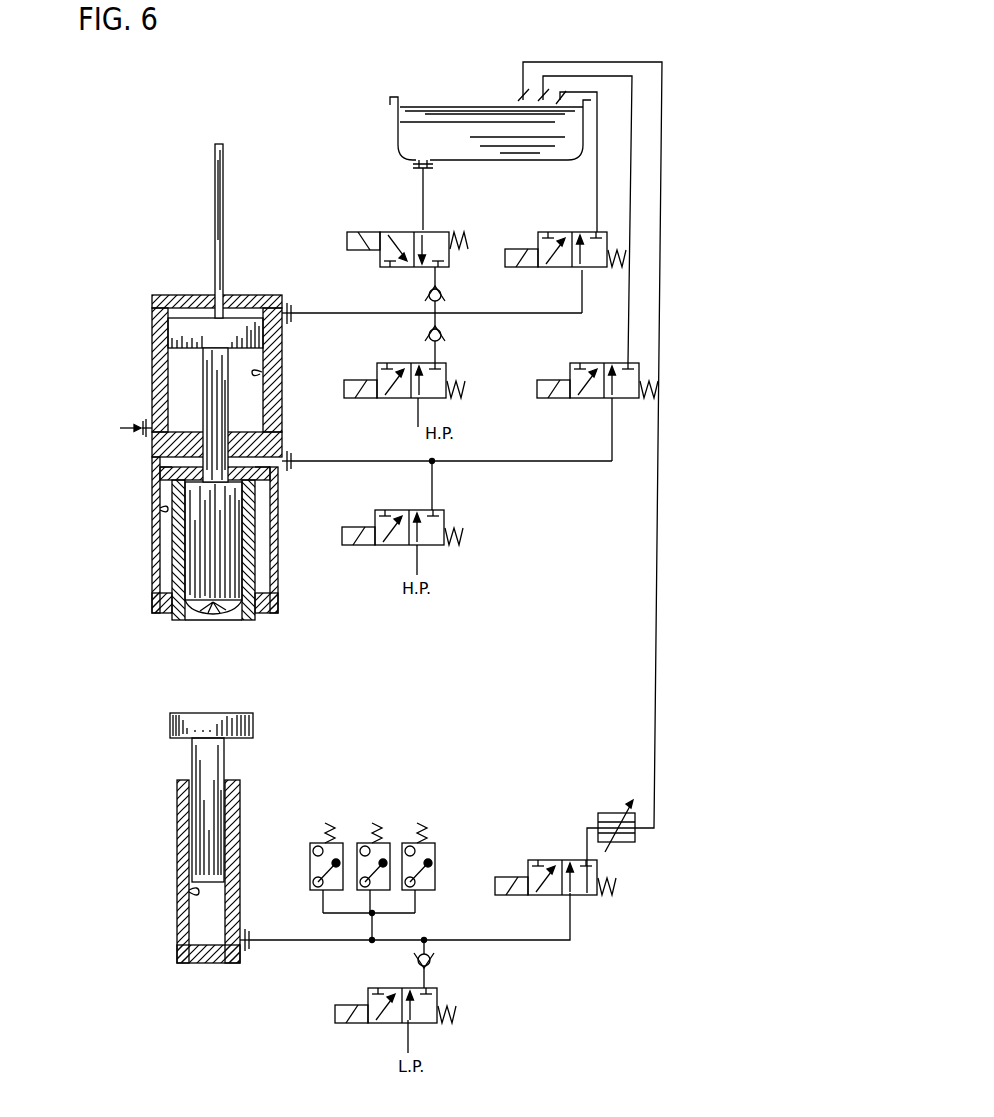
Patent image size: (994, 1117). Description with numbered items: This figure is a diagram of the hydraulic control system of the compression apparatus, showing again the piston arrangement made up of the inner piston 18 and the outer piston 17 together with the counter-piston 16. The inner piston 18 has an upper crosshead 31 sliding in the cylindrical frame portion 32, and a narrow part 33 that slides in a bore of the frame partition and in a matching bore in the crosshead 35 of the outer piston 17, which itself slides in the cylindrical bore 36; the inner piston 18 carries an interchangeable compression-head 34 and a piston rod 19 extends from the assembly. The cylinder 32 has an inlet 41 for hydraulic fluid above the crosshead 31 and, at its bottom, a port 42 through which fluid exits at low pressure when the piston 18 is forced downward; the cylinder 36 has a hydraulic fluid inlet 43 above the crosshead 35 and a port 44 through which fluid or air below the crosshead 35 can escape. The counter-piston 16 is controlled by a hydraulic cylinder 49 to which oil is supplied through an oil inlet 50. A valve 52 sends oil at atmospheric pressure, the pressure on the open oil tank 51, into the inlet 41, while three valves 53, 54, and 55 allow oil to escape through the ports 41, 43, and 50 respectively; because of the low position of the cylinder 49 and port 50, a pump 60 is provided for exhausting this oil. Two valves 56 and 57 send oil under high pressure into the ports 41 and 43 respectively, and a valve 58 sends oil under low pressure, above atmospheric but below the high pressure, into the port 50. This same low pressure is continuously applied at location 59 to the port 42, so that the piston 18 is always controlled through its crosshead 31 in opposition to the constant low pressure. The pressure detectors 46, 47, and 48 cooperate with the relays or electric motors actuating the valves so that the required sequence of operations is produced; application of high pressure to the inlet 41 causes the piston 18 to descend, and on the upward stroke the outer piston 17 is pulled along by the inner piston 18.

The counter-piston 16 is at (253, 730).
The outer piston 17 is at (247, 528).
The inner piston 18 is at (232, 568).
The piston rod 19 is at (225, 212).
The upper crosshead 31 is at (186, 325).
The cylindrical frame portion 32 is at (264, 372).
The narrow part 33 is at (208, 383).
The compression-head 34 is at (228, 614).
The crosshead 35 is at (160, 470).
The cylindrical bore 36 is at (162, 508).
The inlet 41 is at (270, 308).
The port 42 is at (163, 420).
The hydraulic fluid inlet 43 is at (276, 443).
The port 44 is at (156, 590).
The pressure detector 46 is at (312, 858).
The pressure detector 47 is at (360, 860).
The pressure detector 48 is at (430, 860).
The hydraulic cylinder 49 is at (190, 890).
The oil inlet 50 is at (242, 950).
The oil tank 51 is at (456, 130).
The valve 52 is at (430, 248).
The valve 53 is at (552, 250).
The valve 54 is at (577, 385).
The valve 55 is at (532, 874).
The valve 56 is at (440, 390).
The valve 57 is at (440, 525).
The valve 58 is at (438, 1005).
The location 59 is at (88, 431).
The pump 60 is at (632, 843).